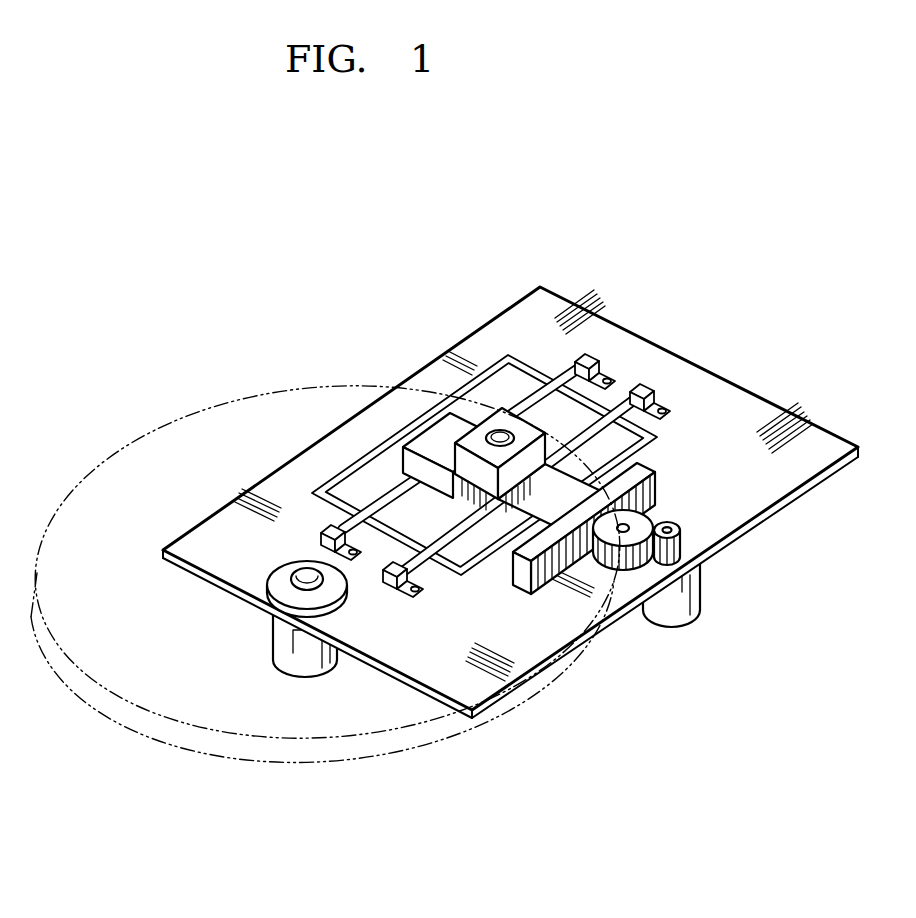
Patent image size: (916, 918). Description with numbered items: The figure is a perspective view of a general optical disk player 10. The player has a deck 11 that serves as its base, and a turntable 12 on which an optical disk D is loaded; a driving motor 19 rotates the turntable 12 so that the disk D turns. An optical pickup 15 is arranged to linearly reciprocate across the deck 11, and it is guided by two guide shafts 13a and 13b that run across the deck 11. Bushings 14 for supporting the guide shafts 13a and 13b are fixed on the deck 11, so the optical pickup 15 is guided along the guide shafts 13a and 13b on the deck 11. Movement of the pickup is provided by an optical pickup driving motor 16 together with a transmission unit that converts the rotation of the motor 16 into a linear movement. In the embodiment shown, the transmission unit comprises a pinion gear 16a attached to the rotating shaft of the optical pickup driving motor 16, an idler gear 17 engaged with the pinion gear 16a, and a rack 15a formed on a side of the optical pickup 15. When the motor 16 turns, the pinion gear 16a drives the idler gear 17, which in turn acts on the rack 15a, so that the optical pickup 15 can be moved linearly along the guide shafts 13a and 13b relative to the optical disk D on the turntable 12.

The optical disk player 10 is at (784, 240).
The deck 11 is at (747, 417).
The turntable 12 is at (292, 583).
The guide shaft 13a is at (543, 397).
The guide shaft 13b is at (647, 437).
The bushings 14 is at (320, 537).
The optical pickup 15 is at (427, 437).
The rack 15a is at (535, 595).
The optical pickup driving motor 16 is at (673, 622).
The pinion gear 16a is at (694, 567).
The idler gear 17 is at (622, 556).
The driving motor 19 is at (307, 660).
The optical disk D is at (237, 435).